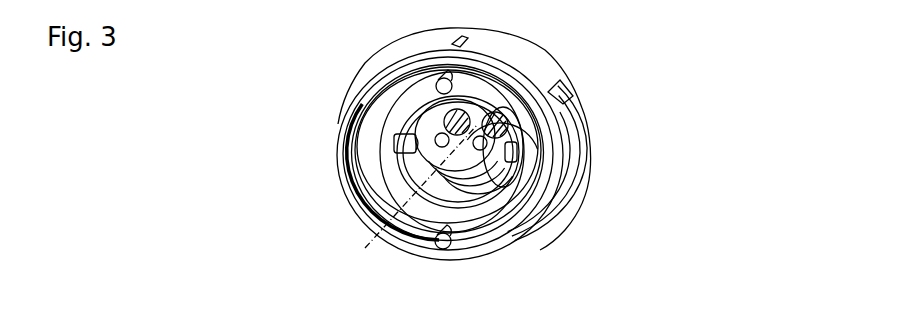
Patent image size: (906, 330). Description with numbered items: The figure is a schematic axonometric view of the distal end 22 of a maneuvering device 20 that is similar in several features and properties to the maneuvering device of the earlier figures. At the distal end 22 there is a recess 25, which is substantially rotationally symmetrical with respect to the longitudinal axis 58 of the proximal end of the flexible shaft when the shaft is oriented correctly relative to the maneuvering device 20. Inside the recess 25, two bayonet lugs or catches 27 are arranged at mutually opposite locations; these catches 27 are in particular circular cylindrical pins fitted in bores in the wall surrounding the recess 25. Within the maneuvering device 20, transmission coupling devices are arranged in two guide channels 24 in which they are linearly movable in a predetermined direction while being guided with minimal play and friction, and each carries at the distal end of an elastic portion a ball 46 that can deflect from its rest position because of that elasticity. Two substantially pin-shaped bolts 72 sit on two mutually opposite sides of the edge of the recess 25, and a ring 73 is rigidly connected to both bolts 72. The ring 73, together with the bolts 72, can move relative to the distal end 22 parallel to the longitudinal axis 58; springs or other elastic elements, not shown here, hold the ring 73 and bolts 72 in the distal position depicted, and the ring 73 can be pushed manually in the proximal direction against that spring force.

The maneuvering device 20 is at (430, 139).
The distal end of the maneuvering device 22 is at (303, 60).
The guide channel 24 is at (500, 182).
The recess 25 is at (430, 155).
The catch 27 is at (400, 155).
The ball 46 is at (493, 210).
The longitudinal axis 58 is at (377, 233).
The bolt 72 is at (437, 89).
The ring 73 is at (508, 45).